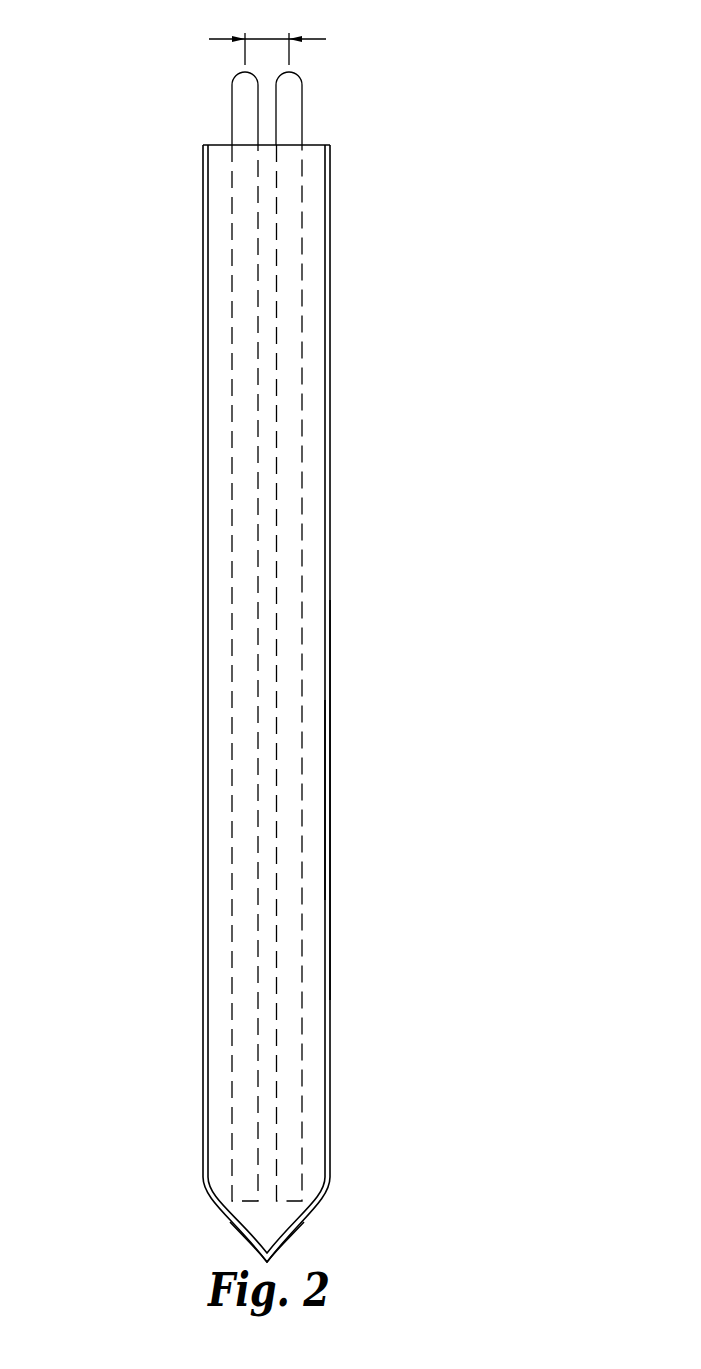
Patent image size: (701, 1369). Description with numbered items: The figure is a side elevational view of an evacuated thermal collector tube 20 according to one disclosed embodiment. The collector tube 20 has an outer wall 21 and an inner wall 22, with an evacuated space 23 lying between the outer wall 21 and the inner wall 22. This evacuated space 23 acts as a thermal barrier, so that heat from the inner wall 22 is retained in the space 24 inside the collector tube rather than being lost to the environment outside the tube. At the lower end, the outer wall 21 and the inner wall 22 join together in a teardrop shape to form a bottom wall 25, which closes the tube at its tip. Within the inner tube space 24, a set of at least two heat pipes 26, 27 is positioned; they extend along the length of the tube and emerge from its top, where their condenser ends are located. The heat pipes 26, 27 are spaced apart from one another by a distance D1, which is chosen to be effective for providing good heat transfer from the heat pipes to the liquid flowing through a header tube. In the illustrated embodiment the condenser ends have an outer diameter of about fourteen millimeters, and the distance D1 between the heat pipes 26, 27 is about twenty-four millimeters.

The collector tube 20 is at (151, 365).
The outer wall 21 is at (330, 960).
The inner wall 22 is at (325, 808).
The evacuated space 23 is at (327, 883).
The inner tube space 24 is at (290, 577).
The bottom wall 25 is at (250, 1238).
The heat pipe 26 is at (230, 79).
The heat pipe 27 is at (306, 78).
The distance D1 is at (263, 39).